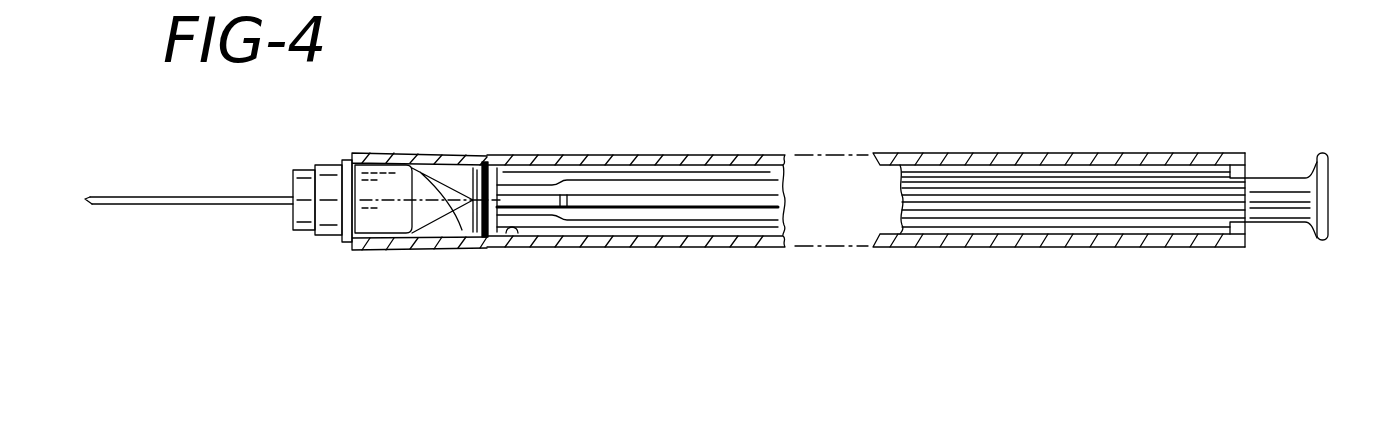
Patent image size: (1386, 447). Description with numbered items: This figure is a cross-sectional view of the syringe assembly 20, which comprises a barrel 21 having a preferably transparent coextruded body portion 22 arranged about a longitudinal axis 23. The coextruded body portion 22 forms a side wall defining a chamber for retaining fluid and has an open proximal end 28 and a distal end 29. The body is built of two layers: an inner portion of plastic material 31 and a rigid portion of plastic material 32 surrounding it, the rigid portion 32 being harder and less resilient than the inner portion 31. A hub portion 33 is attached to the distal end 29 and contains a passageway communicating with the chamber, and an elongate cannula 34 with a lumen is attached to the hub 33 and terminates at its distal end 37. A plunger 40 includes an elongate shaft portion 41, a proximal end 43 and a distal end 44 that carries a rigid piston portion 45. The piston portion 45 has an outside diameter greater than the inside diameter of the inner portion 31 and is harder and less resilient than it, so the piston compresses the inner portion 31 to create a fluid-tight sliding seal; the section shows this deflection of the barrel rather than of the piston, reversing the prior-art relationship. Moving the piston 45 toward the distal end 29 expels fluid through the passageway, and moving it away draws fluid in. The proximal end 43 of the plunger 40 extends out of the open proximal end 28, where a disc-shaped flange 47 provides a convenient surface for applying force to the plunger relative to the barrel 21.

The syringe assembly 20 is at (925, 120).
The barrel 21 is at (685, 155).
The coextruded body portion 22 is at (957, 247).
The longitudinal axis 23 is at (438, 205).
The open proximal end 28 is at (1197, 247).
The distal end 29 is at (390, 160).
The inner portion of plastic material 31 is at (510, 240).
The rigid portion of plastic material 32 is at (720, 247).
The hub portion 33 is at (332, 222).
The elongate cannula 34 is at (186, 207).
The distal end 37 is at (90, 208).
The plunger 40 is at (1173, 184).
The elongate shaft portion 41 is at (749, 187).
The proximal end 43 is at (1283, 178).
The distal end 44 is at (544, 222).
The rigid piston portion 45 is at (487, 165).
The disc-shaped flange 47 is at (1325, 240).